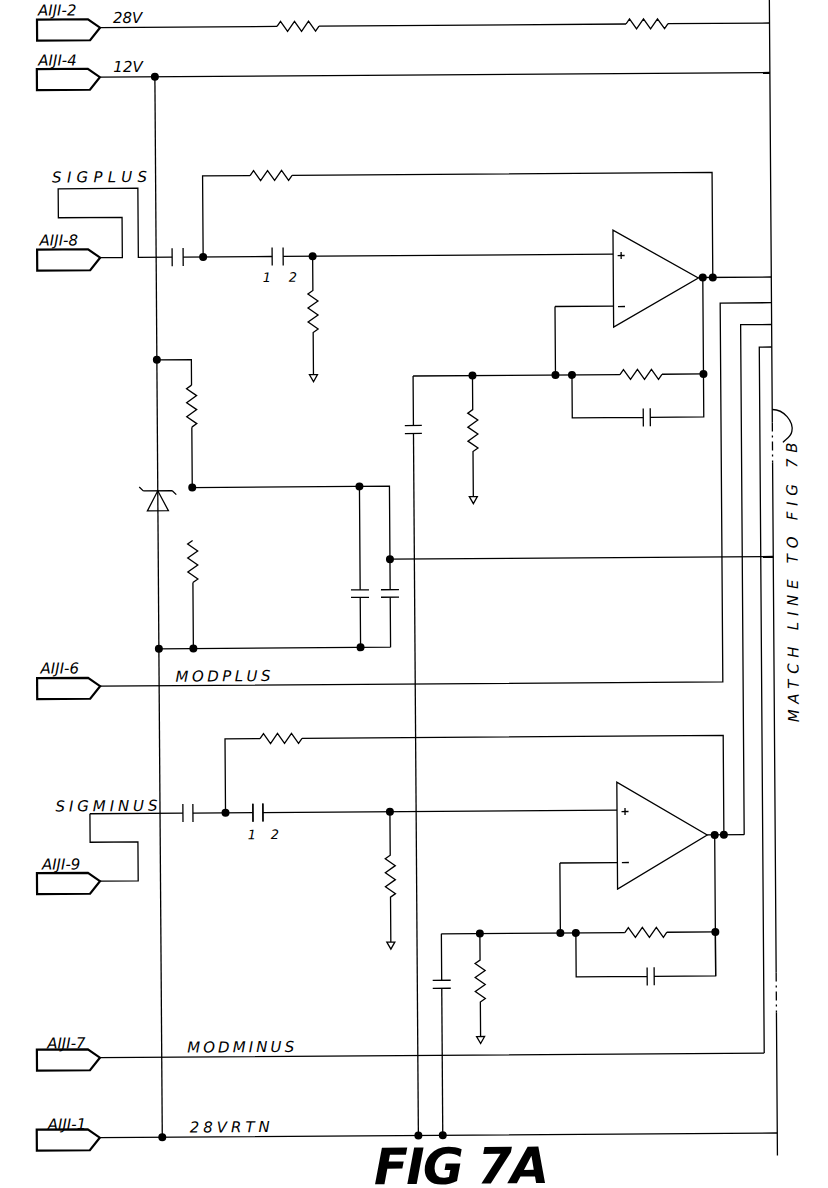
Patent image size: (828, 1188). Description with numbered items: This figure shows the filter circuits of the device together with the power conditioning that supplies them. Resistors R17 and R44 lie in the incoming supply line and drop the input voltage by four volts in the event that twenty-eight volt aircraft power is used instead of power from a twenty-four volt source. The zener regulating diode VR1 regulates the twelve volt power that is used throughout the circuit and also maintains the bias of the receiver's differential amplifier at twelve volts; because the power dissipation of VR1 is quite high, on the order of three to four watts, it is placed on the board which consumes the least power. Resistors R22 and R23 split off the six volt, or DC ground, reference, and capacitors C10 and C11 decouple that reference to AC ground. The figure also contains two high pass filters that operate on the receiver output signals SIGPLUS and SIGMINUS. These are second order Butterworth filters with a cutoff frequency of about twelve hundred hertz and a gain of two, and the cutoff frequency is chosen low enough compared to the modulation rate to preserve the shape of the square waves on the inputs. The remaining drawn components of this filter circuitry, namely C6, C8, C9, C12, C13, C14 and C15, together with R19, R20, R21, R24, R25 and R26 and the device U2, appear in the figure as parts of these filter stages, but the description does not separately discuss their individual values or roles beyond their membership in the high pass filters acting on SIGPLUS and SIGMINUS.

The resistor R17 is at (290, 26).
The resistor R44 is at (641, 26).
The capacitor 1000pF C6 is at (232, 266).
The resistor 100K R19 is at (289, 319).
The operational amplifier TL084 U2 is at (647, 559).
The capacitor 680pF C8 is at (450, 383).
The resistor 180K R20 is at (476, 419).
The resistor 180K R21 is at (619, 425).
The capacitor 680pF C9 is at (612, 452).
The resistor R22 is at (255, 413).
The zener regulating diode VR1 is at (142, 506).
The resistor R23 is at (261, 567).
The capacitor C10 is at (290, 599).
The capacitor C11 is at (467, 604).
The resistor 120K R24 is at (277, 715).
The capacitor 1000pF C13 is at (312, 789).
The capacitor 1000pF C12 is at (243, 828).
The resistor 100K R25 is at (369, 881).
The capacitor 680pF C14 is at (502, 913).
The resistor 180K R26 is at (568, 968).
The capacitor 680pF C15 is at (652, 990).